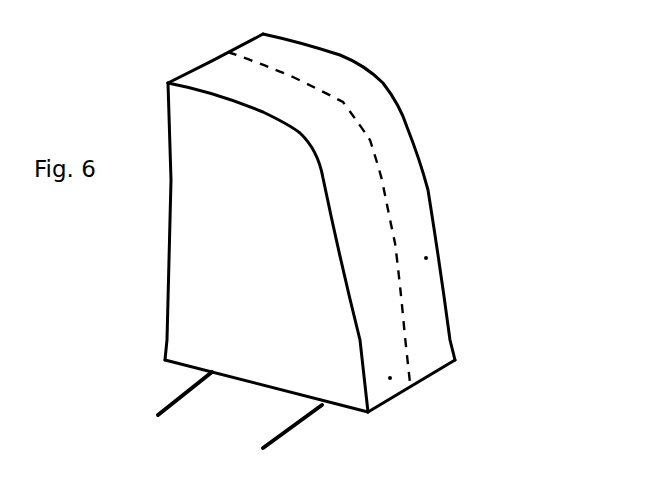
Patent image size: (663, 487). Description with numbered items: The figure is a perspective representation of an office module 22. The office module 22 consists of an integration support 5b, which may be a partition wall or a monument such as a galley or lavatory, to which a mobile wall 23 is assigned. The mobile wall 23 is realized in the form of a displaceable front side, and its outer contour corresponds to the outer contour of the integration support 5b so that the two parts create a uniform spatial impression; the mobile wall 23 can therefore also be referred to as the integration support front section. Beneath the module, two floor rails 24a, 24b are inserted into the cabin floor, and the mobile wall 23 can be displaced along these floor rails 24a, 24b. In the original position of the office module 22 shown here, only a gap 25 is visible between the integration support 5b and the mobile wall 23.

The office module 22 is at (452, 163).
The gap 25 is at (402, 305).
The integration support 5b is at (426, 258).
The mobile wall 23 is at (390, 378).
The floor rail 24a is at (173, 397).
The floor rail 24b is at (272, 437).